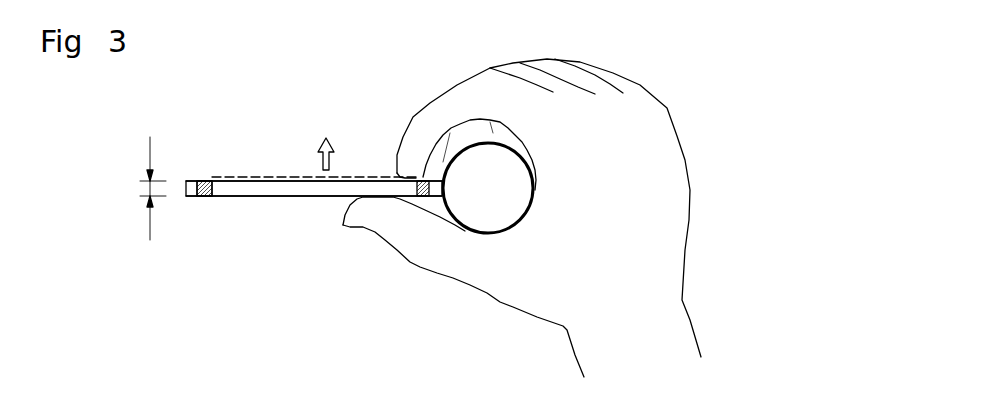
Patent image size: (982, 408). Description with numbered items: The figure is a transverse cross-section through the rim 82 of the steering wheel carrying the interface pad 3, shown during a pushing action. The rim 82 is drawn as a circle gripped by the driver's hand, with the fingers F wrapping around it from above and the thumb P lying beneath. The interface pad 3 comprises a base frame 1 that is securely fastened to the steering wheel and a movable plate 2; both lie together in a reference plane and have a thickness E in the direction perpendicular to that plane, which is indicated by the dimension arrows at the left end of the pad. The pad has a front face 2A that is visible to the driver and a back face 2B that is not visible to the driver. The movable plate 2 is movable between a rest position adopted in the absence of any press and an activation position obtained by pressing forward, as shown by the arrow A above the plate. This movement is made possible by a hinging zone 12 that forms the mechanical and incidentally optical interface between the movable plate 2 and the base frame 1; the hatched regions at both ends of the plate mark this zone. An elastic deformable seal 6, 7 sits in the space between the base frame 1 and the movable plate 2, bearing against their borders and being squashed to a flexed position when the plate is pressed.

The base frame 1 is at (296, 173).
The movable plate 2 is at (314, 209).
The front face 2A is at (314, 226).
The back face 2B is at (314, 149).
The interface pad 3 is at (314, 111).
The elastic deformable seal 6 is at (210, 143).
The elastic deformable seal 7 is at (204, 188).
The hinging zone 12 is at (294, 192).
The rim 82 is at (550, 123).
The thickness E is at (144, 188).
The arrow A is at (326, 141).
The finger F is at (540, 182).
The thumb P is at (463, 287).